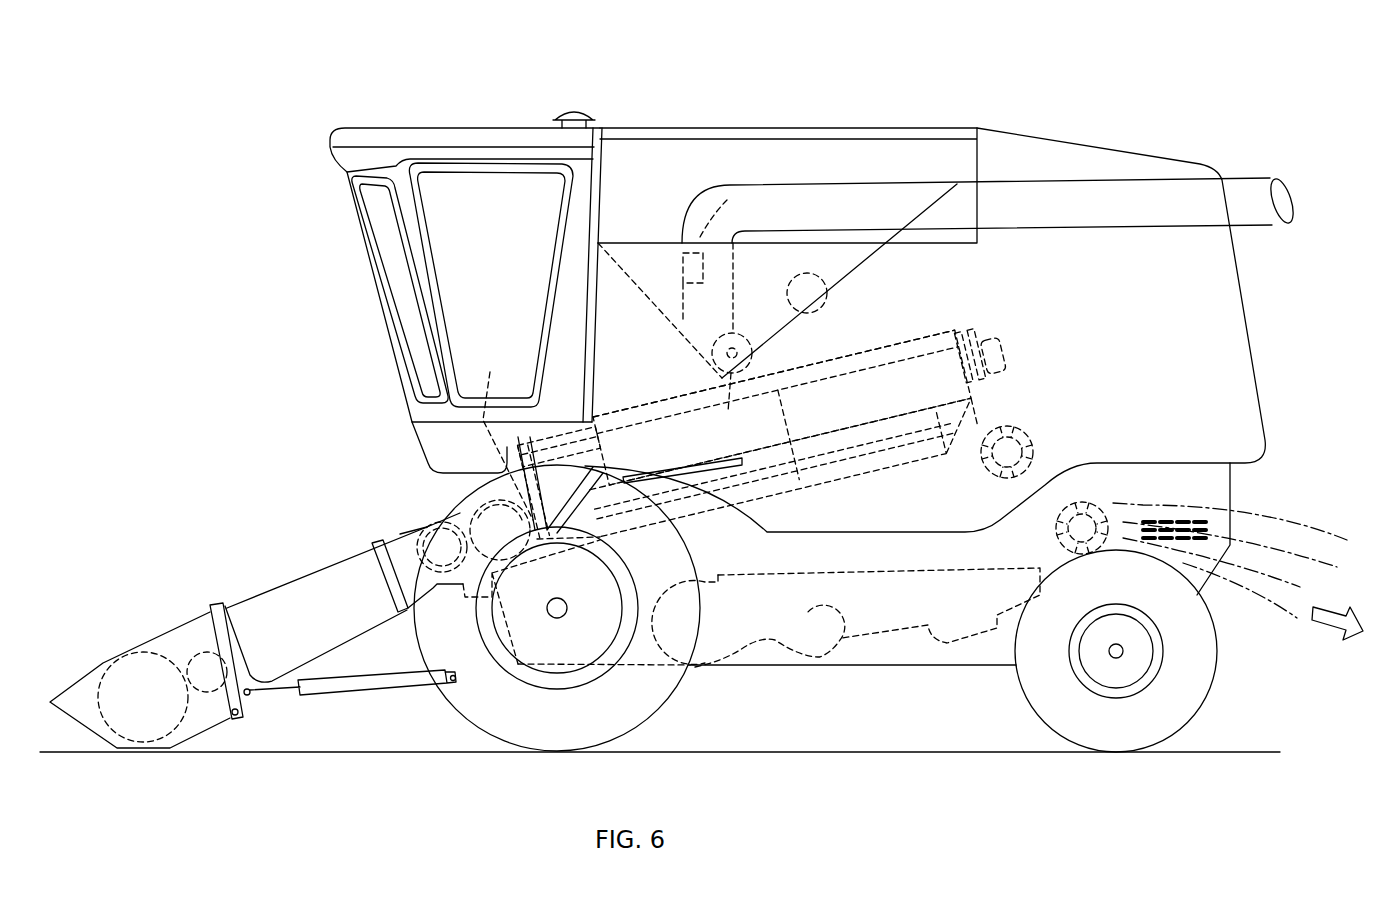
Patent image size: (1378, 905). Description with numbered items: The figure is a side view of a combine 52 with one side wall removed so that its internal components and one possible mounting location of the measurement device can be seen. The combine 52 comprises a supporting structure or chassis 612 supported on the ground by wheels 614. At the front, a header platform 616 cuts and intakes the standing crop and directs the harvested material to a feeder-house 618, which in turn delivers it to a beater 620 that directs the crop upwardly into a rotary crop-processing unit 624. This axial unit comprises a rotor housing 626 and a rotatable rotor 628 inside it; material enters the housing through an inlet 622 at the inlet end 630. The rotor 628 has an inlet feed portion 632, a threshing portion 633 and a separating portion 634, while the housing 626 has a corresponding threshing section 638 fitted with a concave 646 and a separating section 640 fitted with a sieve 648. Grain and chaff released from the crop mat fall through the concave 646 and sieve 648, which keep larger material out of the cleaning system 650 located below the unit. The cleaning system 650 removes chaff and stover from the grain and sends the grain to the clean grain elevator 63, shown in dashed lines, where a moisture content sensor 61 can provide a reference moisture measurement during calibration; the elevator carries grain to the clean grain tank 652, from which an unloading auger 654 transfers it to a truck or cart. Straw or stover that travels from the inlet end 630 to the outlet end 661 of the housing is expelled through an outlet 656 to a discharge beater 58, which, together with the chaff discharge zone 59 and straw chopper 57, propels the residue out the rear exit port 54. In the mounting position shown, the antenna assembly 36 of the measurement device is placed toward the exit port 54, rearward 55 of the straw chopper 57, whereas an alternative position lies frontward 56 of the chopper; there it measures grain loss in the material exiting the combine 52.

The combine 52 is at (1091, 92).
The exit port 54 is at (1272, 525).
The rearward 55 is at (1322, 628).
The frontward 56 is at (1130, 502).
The straw chopper 57 is at (1096, 523).
The beater 58 is at (1035, 440).
The chaff discharge zone 59 is at (965, 491).
The antenna assembly 36 is at (1168, 518).
The moisture content sensor 61 is at (727, 194).
The clean grain elevator 63 is at (752, 272).
The chassis 612 is at (808, 392).
The wheels 614 is at (670, 705).
The header platform 616 is at (78, 667).
The feeder-house 618 is at (315, 570).
The beater 620 is at (463, 505).
The inlet 622 is at (633, 523).
The rotary crop-processing unit 624 is at (873, 333).
The rotor housing 626 is at (969, 356).
The rotor 628 is at (993, 355).
The inlet end 630 is at (502, 431).
The inlet feed portion 632 is at (568, 482).
The threshing portion 633 is at (778, 390).
The separating portion 634 is at (788, 434).
The threshing section 638 is at (678, 377).
The separating section 640 is at (774, 373).
The concave 646 is at (786, 467).
The sieve 648 is at (858, 478).
The cleaning system 650 is at (878, 570).
The clean grain tank 652 is at (645, 285).
The unloading auger 654 is at (782, 407).
The outlet 656 is at (993, 407).
The end 661 is at (985, 395).